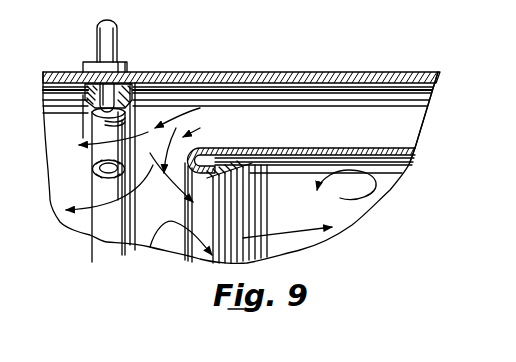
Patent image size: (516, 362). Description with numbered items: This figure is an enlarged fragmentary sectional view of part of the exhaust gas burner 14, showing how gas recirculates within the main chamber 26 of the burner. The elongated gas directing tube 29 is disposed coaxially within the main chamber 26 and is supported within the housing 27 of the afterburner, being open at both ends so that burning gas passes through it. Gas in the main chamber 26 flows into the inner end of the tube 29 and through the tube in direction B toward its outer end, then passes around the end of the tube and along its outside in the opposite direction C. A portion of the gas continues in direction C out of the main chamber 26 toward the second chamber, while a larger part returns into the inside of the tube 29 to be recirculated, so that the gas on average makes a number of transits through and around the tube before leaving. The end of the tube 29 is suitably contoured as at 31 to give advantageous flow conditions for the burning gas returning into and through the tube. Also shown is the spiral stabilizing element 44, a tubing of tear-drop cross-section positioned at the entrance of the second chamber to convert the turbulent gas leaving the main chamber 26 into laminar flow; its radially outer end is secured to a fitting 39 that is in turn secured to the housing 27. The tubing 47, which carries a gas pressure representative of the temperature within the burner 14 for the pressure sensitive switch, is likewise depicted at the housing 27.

The exhaust gas burner 14 is at (326, 57).
The housing 27 is at (238, 72).
The main chamber 26 is at (408, 118).
The gas directing tube 29 is at (348, 148).
The contoured end of tube 31 is at (203, 153).
The spiral stabilizing element 44 is at (106, 235).
The fitting 39 is at (83, 62).
The tubing 47 is at (97, 34).
The flow direction B is at (250, 212).
The flow direction C is at (264, 129).